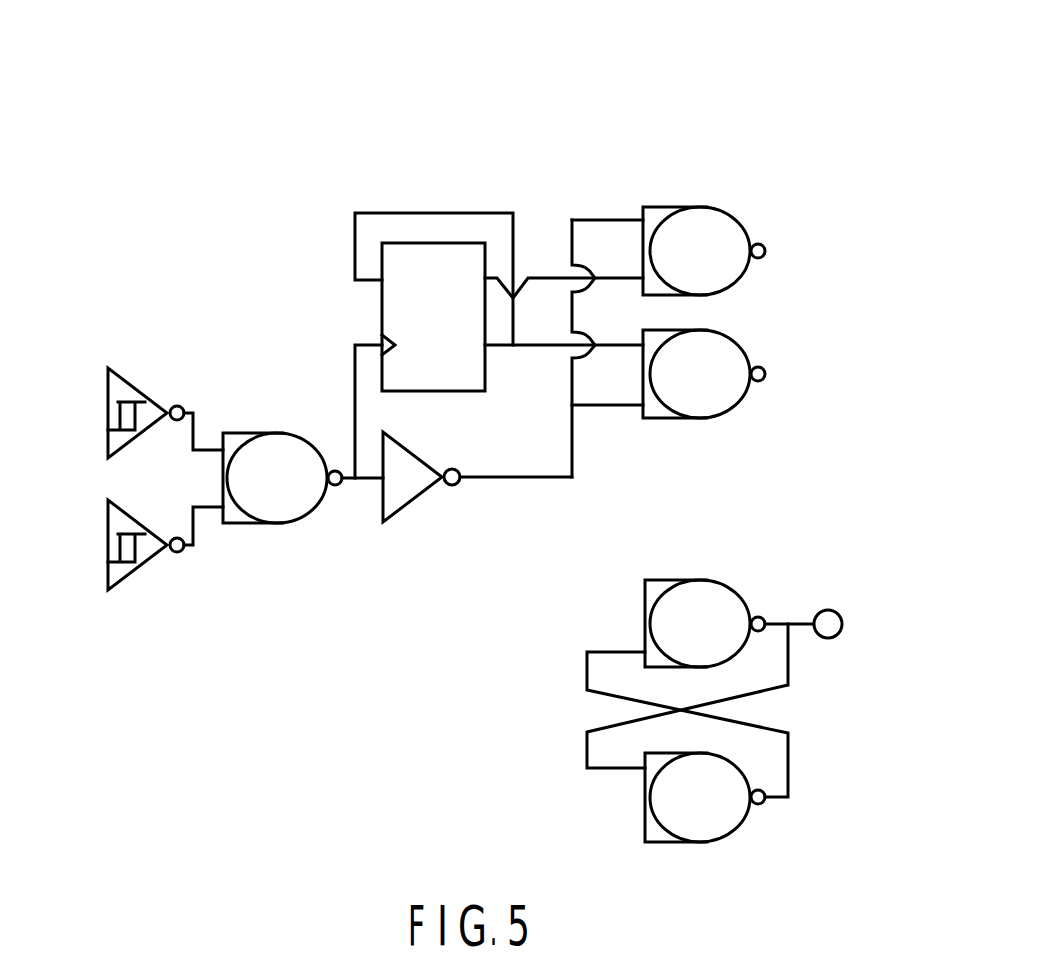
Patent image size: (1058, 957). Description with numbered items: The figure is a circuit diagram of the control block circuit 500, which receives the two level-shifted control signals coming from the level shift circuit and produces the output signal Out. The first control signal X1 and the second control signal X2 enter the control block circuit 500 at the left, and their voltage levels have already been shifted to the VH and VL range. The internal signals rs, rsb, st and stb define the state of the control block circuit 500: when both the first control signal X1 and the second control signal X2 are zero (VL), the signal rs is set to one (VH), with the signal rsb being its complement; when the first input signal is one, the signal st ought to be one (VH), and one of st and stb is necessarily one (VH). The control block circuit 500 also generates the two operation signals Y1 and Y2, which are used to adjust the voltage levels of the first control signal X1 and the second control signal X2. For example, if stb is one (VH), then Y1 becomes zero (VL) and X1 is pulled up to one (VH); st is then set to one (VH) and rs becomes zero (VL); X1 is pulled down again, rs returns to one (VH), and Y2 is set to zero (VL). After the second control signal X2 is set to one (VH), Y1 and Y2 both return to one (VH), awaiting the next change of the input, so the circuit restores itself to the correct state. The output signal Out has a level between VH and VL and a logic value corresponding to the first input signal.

The control block circuit 500 is at (537, 138).
The first control signal X1 is at (108, 413).
The second control signal X2 is at (108, 545).
The first operation signal Y1 is at (765, 374).
The second operation signal Y2 is at (765, 251).
The output signal Out is at (849, 629).
The rs signal rs is at (551, 357).
The rsb signal rsb is at (340, 411).
The st signal st is at (564, 273).
The stb signal stb is at (564, 370).